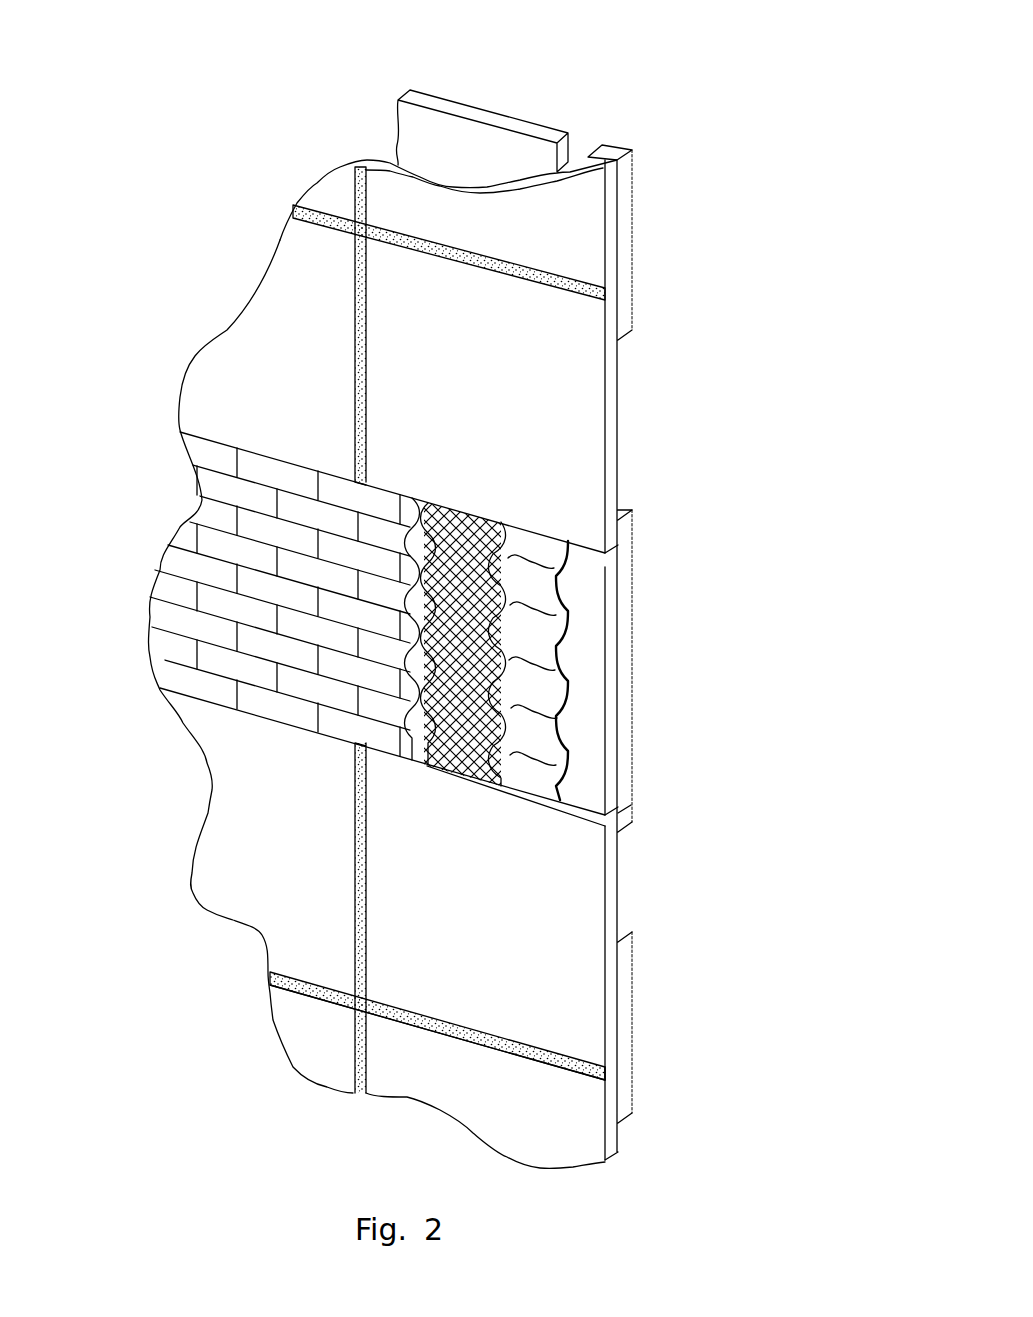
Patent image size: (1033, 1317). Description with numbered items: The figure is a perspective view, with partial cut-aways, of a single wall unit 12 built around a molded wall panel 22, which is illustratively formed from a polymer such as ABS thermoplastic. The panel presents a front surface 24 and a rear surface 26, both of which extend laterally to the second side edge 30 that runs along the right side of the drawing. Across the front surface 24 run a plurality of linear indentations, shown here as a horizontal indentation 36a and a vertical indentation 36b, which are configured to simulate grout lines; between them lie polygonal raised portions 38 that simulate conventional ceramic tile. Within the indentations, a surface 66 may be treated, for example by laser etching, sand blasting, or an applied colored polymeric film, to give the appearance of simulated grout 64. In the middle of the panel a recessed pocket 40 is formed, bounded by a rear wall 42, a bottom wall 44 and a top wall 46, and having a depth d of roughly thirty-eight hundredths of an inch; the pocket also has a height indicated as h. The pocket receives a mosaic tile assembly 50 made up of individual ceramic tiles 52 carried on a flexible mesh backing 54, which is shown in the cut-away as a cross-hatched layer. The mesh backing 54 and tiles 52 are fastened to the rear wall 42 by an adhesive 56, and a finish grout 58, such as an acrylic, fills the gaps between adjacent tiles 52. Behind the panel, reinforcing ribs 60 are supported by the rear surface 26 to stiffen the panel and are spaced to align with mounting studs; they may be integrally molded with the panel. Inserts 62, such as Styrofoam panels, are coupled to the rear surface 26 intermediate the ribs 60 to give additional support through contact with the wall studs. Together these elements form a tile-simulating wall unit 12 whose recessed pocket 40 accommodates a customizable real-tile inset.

The wall unit 12 is at (705, 213).
The molded wall panel 22 is at (613, 367).
The front surface 24 is at (266, 364).
The rear surface 26 is at (620, 453).
The second side edge 30 is at (615, 873).
The horizontal indentations 36a is at (307, 990).
The vertical indentations 36b is at (353, 820).
The raised portions 38 is at (590, 977).
The recessed pocket 40 is at (597, 735).
The rear wall 42 is at (628, 677).
The bottom wall 44 is at (593, 803).
The top wall 46 is at (605, 553).
The mosaic tile assembly 50 is at (143, 658).
The ceramic tiles 52 is at (206, 539).
The mesh backing 54 is at (463, 753).
The adhesive 56 is at (550, 775).
The finish grout 58 is at (233, 695).
The reinforcing ribs 60 is at (613, 150).
The inserts 62 is at (482, 108).
The simulated grout 64 is at (503, 1047).
The surface 66 is at (605, 1073).
The gap height h is at (525, 832).
The depth d is at (572, 647).